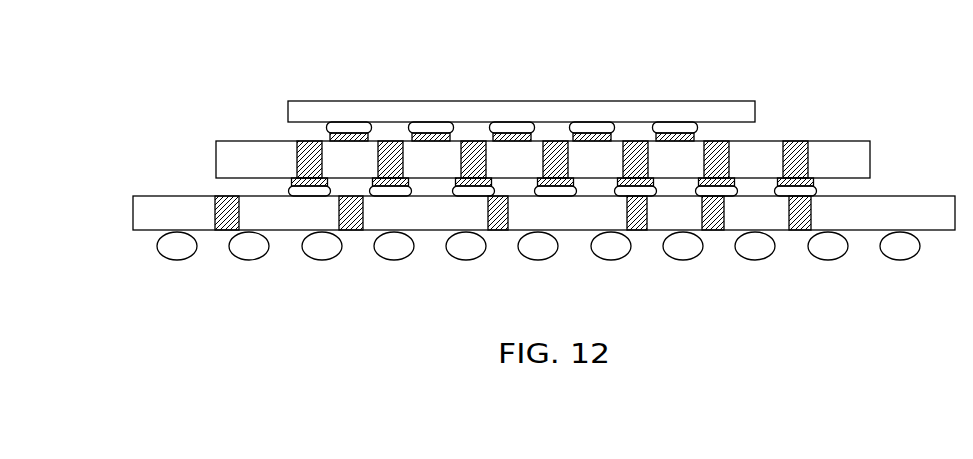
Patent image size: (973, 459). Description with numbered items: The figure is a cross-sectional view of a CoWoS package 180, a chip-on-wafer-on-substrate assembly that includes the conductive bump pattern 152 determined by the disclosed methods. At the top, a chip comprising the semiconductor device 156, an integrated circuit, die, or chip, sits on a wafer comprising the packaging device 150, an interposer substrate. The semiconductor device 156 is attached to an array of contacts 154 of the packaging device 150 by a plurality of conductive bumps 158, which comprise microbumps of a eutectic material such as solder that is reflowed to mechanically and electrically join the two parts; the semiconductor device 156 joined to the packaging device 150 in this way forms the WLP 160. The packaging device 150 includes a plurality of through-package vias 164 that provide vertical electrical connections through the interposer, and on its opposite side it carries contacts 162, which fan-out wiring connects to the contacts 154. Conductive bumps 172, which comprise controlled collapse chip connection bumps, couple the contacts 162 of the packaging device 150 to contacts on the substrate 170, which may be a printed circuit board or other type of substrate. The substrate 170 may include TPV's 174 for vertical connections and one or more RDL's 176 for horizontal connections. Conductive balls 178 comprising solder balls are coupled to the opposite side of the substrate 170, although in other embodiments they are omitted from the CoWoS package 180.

The packaging device 150 is at (245, 147).
The conductive bump pattern 152 is at (585, 153).
The contacts 154 is at (676, 137).
The semiconductor device 156 is at (622, 108).
The conductive bumps 158 is at (680, 127).
The WLP 160 is at (888, 67).
The contacts 162 is at (397, 188).
The through-package vias 164 is at (378, 158).
The substrate 170 is at (142, 213).
The conductive bumps 172 is at (300, 194).
The TPV's 174 is at (223, 230).
The RDL's 176 is at (150, 194).
The conductive balls 178 is at (160, 247).
The CoWoS package 180 is at (133, 103).